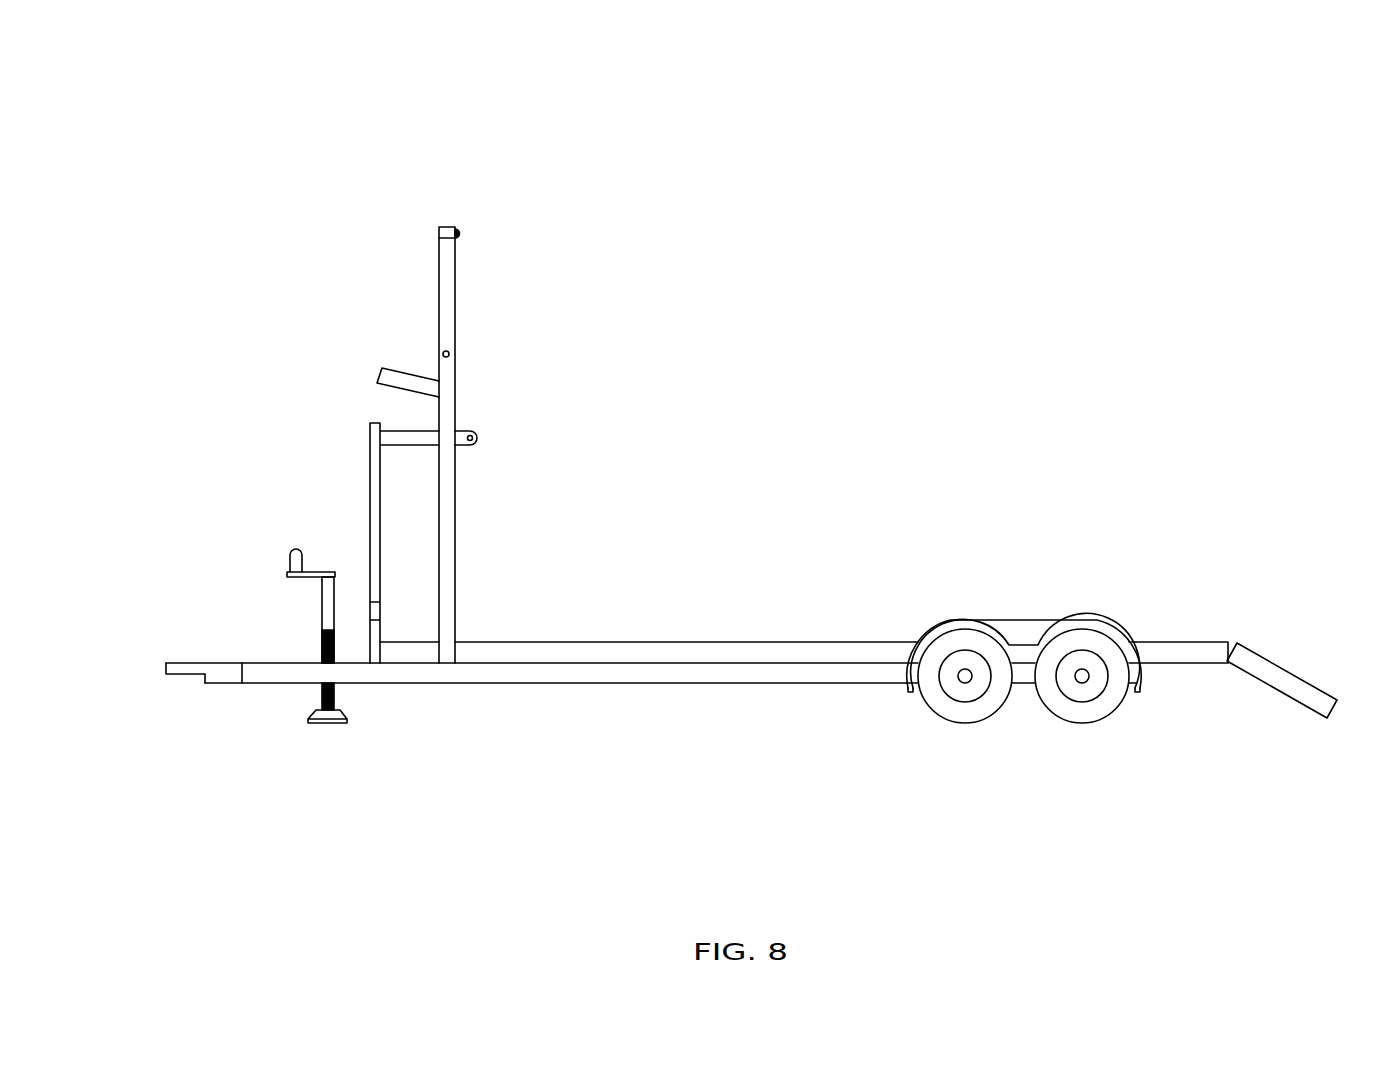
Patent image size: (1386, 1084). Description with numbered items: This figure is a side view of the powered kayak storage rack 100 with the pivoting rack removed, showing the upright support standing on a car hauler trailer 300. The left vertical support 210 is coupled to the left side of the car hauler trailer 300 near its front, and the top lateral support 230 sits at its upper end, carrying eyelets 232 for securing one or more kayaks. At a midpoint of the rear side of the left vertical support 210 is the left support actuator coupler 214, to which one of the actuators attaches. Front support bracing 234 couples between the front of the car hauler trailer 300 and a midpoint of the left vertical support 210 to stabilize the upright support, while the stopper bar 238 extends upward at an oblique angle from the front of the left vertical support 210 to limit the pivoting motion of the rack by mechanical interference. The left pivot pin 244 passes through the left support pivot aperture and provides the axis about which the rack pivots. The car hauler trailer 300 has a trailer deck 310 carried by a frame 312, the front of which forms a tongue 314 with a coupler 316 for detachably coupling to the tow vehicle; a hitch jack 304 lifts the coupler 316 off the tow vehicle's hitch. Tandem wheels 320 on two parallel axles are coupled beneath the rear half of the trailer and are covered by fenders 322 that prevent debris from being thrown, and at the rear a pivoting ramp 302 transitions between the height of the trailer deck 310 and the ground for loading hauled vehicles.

The powered kayak storage rack 100 is at (190, 212).
The left vertical support 210 is at (455, 539).
The left support actuator coupler 214 is at (476, 437).
The top lateral support 230 is at (440, 228).
The eyelets 232 is at (463, 232).
The front support bracing 234 is at (373, 470).
The stopper bar 238 is at (380, 369).
The left pivot pin 244 is at (450, 352).
The car hauler trailer 300 is at (848, 645).
The ramps 302 is at (1283, 667).
The hitch jack 304 is at (325, 622).
The trailer deck 310 is at (708, 645).
The frame 312 is at (818, 683).
The tongue 314 is at (292, 680).
The coupler 316 is at (175, 670).
The tandem wheels 320 is at (1057, 713).
The fenders 322 is at (1030, 622).